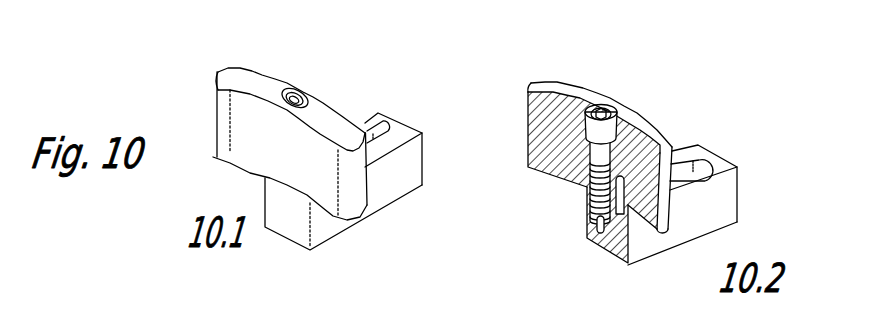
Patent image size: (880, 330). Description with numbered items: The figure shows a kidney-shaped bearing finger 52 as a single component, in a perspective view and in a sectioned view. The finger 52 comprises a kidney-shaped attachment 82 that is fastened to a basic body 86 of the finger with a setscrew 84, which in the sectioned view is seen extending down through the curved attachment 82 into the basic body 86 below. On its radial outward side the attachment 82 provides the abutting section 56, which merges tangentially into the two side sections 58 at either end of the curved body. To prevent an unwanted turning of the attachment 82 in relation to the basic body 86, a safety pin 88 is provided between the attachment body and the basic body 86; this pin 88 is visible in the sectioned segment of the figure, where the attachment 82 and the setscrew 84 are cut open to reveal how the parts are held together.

The bearing finger 52 is at (461, 160).
The abutting section 56 is at (340, 106).
The side sections 58 is at (217, 115).
The kidney-shaped attachment 82 is at (248, 78).
The setscrew 84 is at (602, 107).
The basic body 86 is at (398, 180).
The safety pin 88 is at (616, 258).